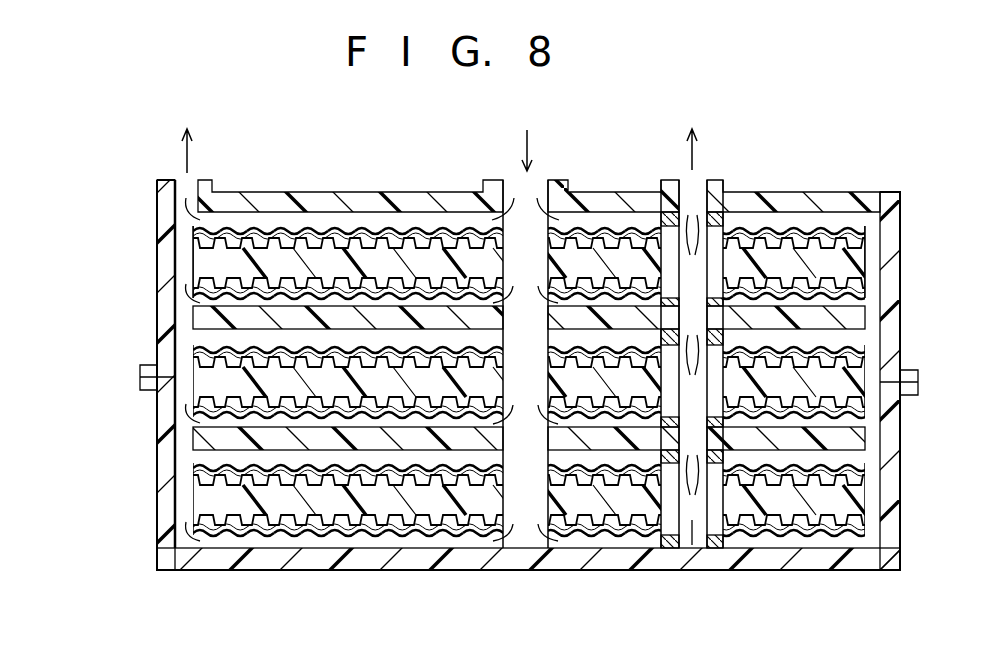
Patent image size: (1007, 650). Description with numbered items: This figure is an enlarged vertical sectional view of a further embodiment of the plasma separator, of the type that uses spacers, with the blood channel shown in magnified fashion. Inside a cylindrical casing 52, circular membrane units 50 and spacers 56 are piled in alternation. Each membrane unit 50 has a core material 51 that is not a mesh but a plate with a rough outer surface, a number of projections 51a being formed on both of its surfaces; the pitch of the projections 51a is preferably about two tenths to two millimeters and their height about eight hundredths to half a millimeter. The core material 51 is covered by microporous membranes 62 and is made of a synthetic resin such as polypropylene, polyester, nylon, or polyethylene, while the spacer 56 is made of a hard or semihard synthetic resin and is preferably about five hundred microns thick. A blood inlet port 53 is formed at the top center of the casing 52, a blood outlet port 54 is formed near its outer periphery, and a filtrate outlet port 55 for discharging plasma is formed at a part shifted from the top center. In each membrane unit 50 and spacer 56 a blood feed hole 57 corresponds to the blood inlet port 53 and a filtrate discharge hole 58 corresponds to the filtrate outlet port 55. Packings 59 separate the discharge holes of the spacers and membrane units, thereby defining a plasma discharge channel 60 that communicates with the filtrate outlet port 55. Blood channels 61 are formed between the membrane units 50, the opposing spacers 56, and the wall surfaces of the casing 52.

The membrane unit 50 is at (530, 384).
The core material 51 is at (370, 255).
The projections 51a is at (320, 238).
The casing 52 is at (890, 247).
The blood inlet port 53 is at (540, 192).
The blood outlet port 54 is at (188, 198).
The filtrate outlet port 55 is at (707, 185).
The spacer 56 is at (855, 320).
The blood feed hole 57 is at (531, 518).
The filtrate discharge hole 58 is at (696, 545).
The packing 59 is at (661, 548).
The plasma discharge channel 60 is at (655, 250).
The blood channel 61 is at (260, 542).
The microporous membrane 62 is at (425, 232).